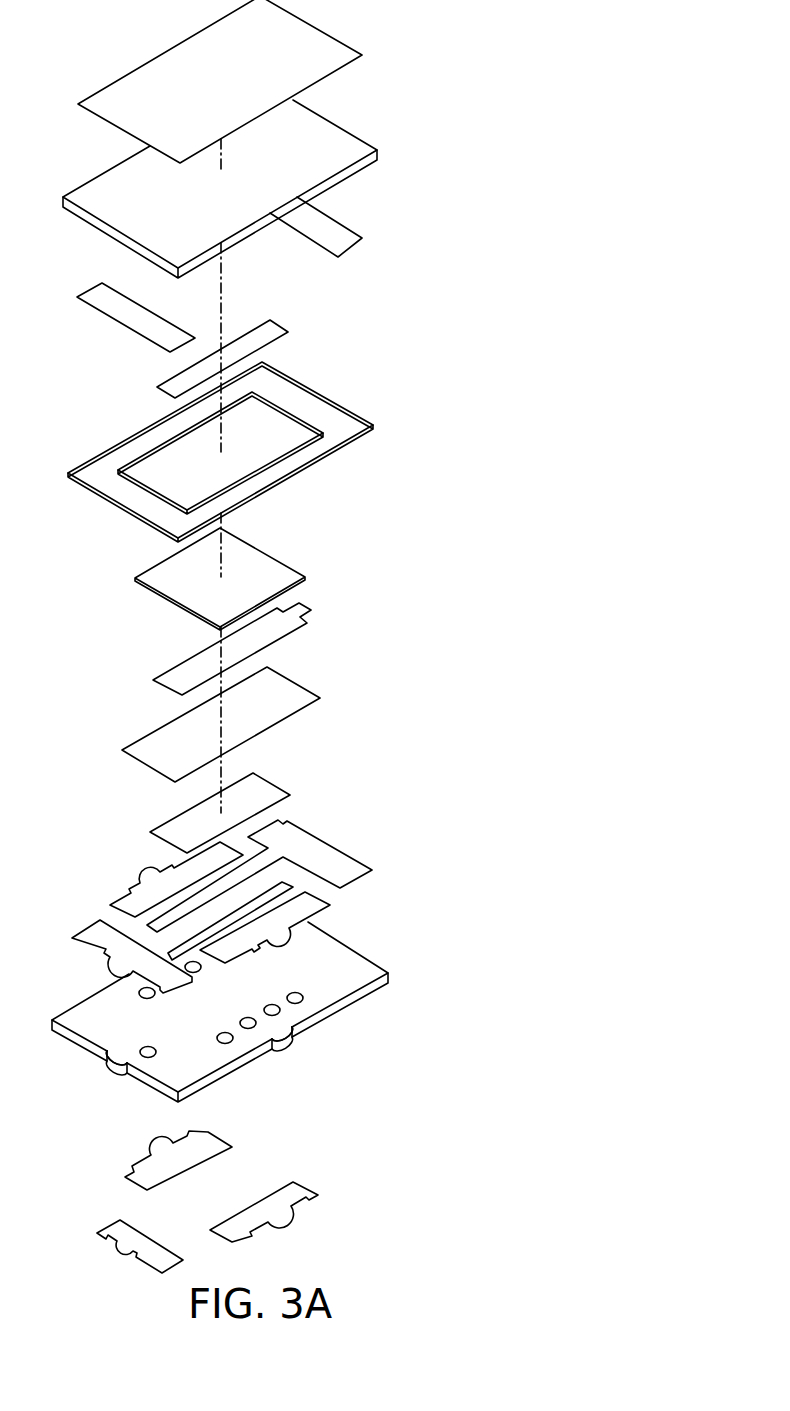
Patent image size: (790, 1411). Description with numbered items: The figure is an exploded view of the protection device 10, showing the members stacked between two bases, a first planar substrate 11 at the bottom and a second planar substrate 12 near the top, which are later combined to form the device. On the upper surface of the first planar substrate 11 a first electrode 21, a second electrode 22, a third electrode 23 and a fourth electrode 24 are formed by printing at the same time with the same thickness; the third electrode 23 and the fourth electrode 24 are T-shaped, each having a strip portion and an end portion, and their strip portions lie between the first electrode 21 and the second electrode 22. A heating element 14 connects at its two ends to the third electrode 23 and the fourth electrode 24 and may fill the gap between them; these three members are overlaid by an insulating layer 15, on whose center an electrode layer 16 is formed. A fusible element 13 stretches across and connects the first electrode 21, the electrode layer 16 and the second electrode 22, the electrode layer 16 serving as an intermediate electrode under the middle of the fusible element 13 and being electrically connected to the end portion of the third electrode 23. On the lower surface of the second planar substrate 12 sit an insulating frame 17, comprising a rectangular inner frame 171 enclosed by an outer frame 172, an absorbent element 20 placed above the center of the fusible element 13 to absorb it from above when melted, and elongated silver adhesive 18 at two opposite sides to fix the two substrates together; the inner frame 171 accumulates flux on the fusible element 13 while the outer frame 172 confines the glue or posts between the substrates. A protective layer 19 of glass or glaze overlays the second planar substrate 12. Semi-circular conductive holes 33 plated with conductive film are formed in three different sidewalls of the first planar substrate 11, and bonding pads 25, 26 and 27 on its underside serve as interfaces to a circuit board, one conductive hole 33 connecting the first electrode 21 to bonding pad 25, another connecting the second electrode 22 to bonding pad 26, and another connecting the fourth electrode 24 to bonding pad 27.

The protection device 10 is at (343, 636).
The first planar substrate 11 is at (353, 963).
The second planar substrate 12 is at (320, 120).
The fusible element 13 is at (252, 555).
The heating element 14 is at (257, 788).
The insulating layer 15 is at (287, 687).
The electrode layer 16 is at (310, 605).
The insulating frame 17 is at (263, 451).
The inner frame 171 is at (297, 452).
The outer frame 172 is at (377, 423).
The silver adhesive 18 is at (320, 223).
The protective layer 19 is at (322, 43).
The absorbent element 20 is at (273, 328).
The first electrode 21 is at (130, 898).
The second electrode 22 is at (317, 906).
The third electrode 23 is at (255, 867).
The fourth electrode 24 is at (280, 885).
The bonding pad 25 is at (147, 1165).
The bonding pad 26 is at (292, 1207).
The bonding pad 27 is at (102, 1235).
The conductive hole 33 is at (110, 1055).